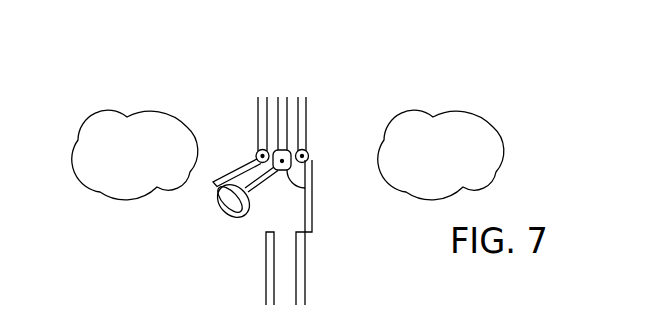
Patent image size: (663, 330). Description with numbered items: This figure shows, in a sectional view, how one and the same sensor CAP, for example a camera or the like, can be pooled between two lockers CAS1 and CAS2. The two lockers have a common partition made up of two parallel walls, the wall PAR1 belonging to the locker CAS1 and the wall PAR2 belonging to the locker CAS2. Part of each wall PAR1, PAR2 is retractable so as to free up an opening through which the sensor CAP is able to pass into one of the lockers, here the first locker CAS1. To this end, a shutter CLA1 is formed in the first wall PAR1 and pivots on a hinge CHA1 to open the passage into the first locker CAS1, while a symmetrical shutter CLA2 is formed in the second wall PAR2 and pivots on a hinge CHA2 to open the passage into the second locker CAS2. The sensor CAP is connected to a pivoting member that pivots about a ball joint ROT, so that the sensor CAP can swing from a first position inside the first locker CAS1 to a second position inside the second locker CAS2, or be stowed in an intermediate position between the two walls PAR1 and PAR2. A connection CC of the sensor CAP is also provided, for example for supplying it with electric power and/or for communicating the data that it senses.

The first locker CAS1 is at (135, 155).
The second locker CAS2 is at (441, 155).
The hinge CHA1 is at (258, 150).
The connection CC is at (283, 97).
The hinge CHA2 is at (307, 150).
The shutter CLA1 is at (241, 165).
The sensor CAP is at (222, 205).
The ball joint ROT is at (312, 188).
The shutter CLA2 is at (312, 207).
The first wall PAR1 is at (266, 273).
The second wall PAR2 is at (305, 275).